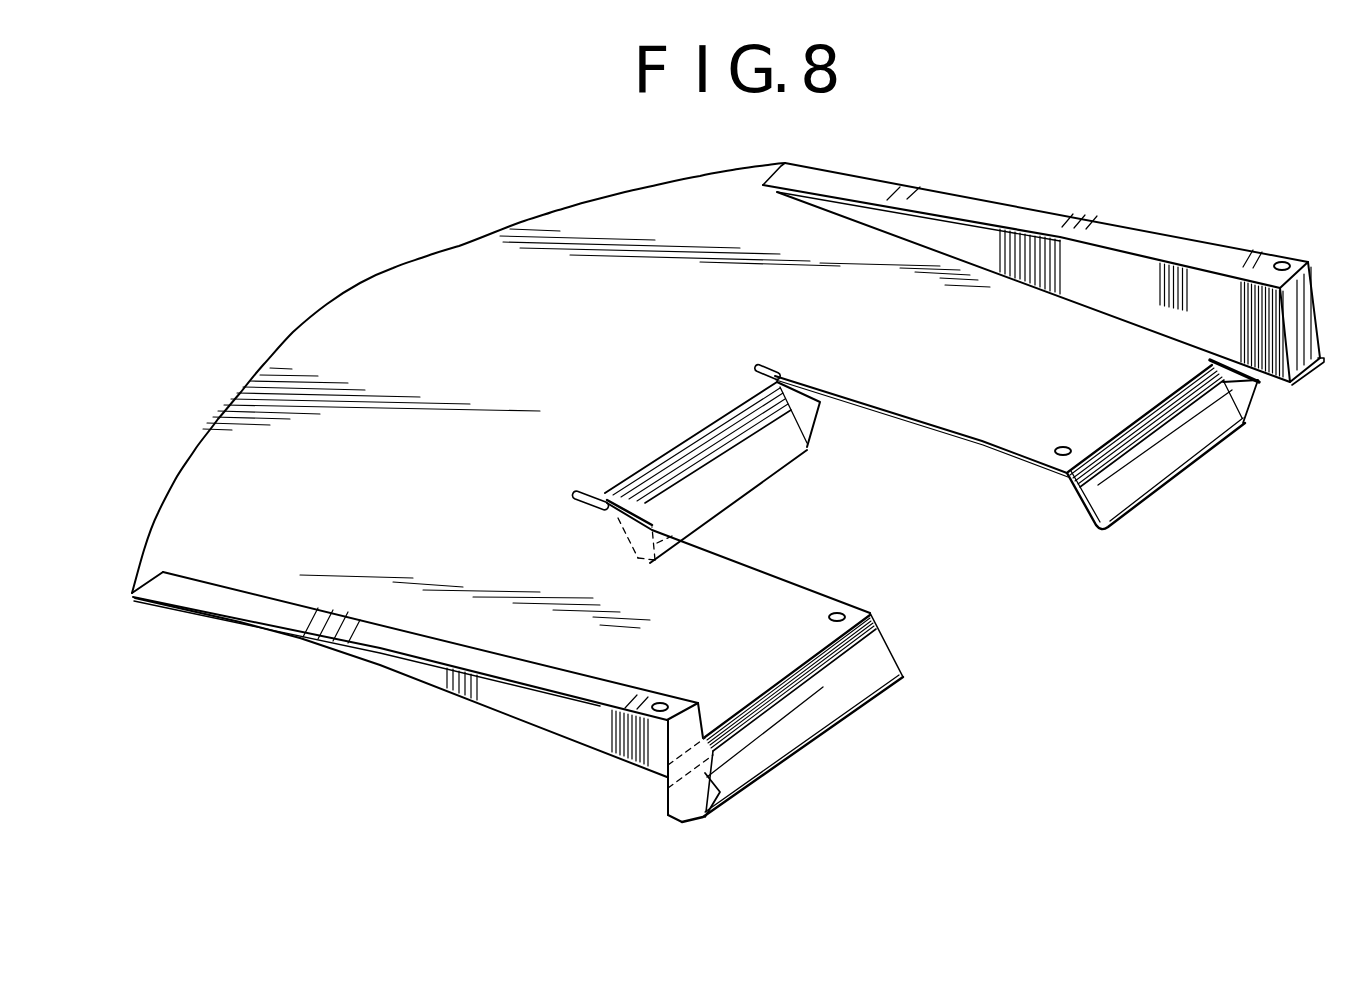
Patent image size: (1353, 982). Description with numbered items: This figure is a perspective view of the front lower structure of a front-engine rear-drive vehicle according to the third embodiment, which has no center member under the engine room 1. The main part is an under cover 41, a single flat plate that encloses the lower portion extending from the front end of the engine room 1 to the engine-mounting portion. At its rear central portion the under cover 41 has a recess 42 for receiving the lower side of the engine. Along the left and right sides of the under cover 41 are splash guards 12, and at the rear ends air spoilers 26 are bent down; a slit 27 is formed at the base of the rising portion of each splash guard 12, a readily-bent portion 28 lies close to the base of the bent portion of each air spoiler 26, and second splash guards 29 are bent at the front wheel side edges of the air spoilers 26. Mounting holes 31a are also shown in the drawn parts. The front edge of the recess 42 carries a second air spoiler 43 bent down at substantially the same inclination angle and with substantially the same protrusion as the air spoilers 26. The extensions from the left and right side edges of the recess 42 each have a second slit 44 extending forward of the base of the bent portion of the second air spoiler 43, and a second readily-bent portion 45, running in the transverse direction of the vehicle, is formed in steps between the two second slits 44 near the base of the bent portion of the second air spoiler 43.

The engine room 1 is at (1334, 462).
The splash guard 12 is at (1177, 243).
The air spoiler 26 is at (1167, 455).
The slit 27 is at (1212, 357).
The readily-bent portion 28 is at (1147, 417).
The second splash guard 29 is at (1258, 400).
The mounting hole 31a is at (1285, 262).
The under cover 41 is at (566, 210).
The recess 42 is at (928, 424).
The second air spoiler 43 is at (747, 467).
The second slit 44 is at (762, 366).
The second readily-bent portion 45 is at (695, 438).